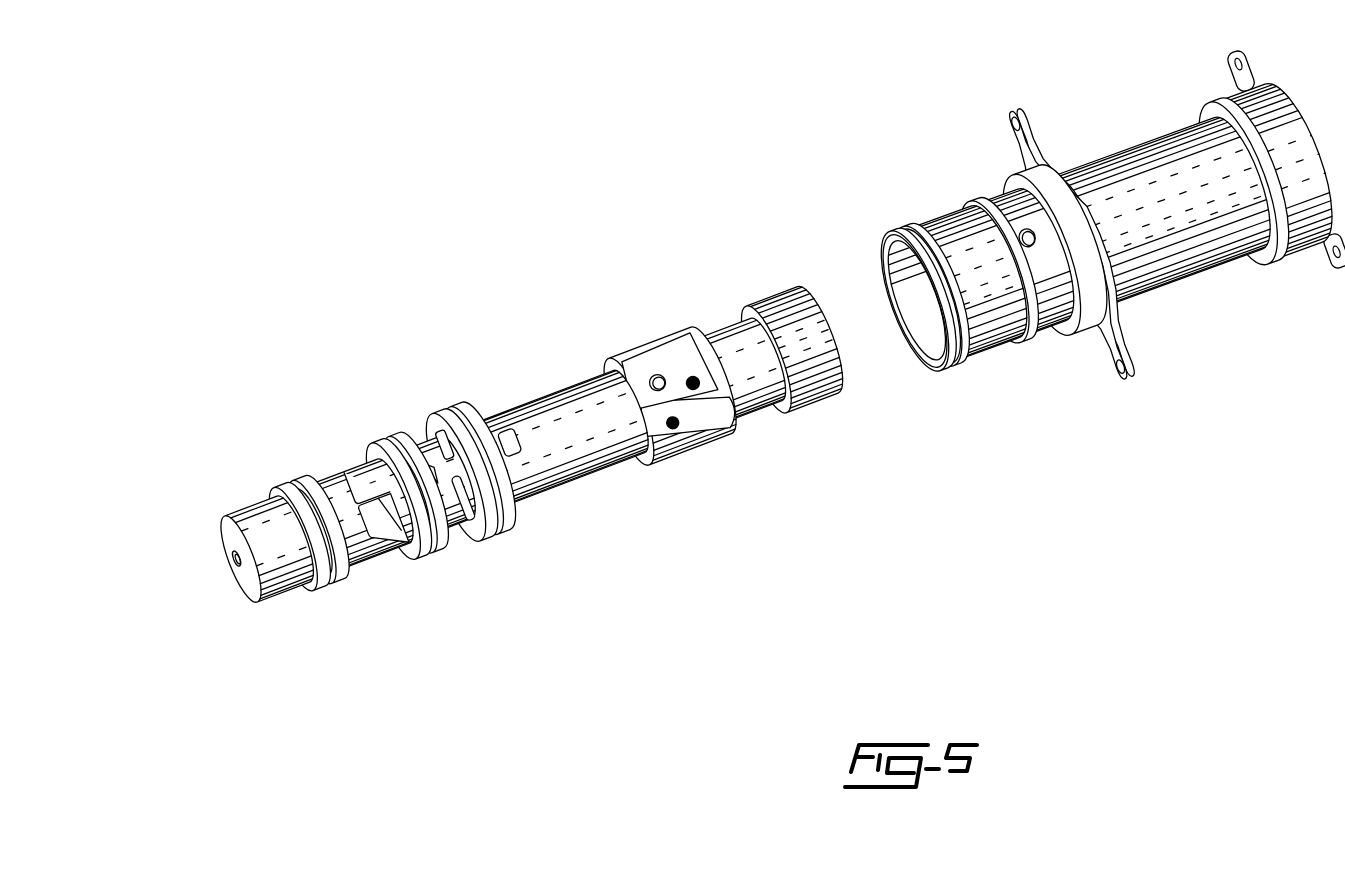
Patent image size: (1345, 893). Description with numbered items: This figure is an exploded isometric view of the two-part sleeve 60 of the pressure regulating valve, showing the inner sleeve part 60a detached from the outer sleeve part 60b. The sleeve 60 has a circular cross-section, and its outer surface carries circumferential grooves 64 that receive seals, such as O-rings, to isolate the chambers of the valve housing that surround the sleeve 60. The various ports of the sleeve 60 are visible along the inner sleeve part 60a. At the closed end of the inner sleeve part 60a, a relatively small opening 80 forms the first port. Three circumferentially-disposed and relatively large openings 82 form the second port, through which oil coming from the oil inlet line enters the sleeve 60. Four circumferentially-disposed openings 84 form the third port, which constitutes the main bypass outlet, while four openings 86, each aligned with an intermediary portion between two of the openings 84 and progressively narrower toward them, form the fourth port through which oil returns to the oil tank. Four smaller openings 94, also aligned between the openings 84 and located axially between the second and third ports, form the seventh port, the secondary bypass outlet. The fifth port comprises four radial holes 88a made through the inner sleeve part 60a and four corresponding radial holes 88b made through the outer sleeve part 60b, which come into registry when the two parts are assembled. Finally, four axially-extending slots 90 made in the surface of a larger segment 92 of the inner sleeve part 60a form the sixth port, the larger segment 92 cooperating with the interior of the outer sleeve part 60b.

The sleeve 60 is at (720, 373).
The inner sleeve part 60a is at (473, 441).
The outer sleeve part 60b is at (1100, 228).
The opening 80 is at (230, 537).
The circumferential grooves 64 is at (313, 512).
The openings 82 is at (378, 523).
The openings 94 is at (430, 455).
The openings 84 is at (463, 531).
The openings 86 is at (509, 424).
The radial holes 88a is at (656, 366).
The radial holes 88b is at (1014, 222).
The larger segment 92 is at (692, 380).
The axially-extending slots 90 is at (672, 423).